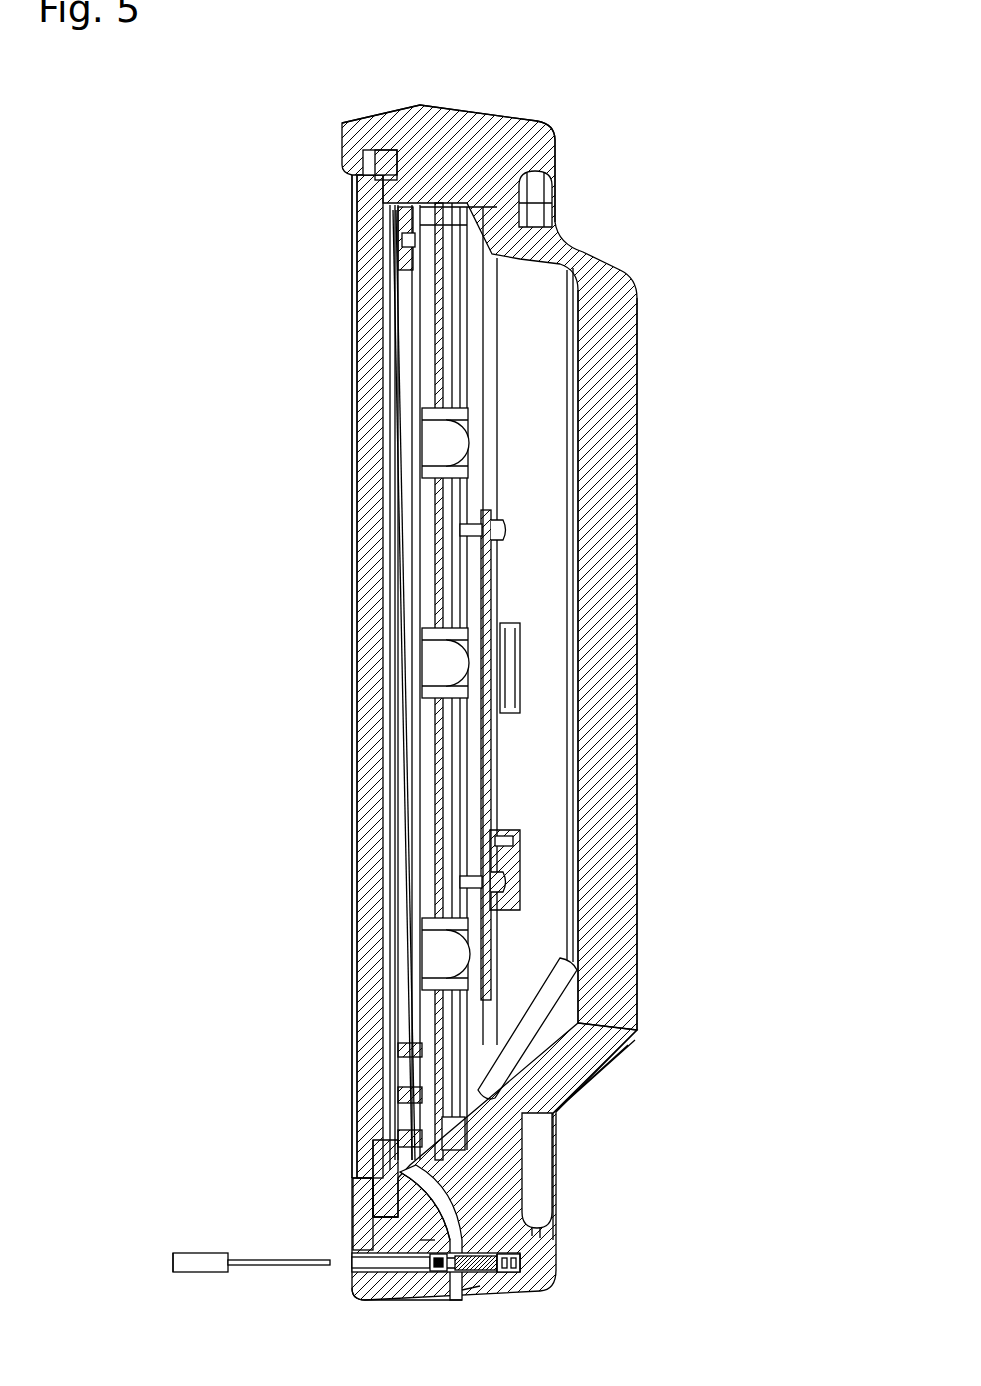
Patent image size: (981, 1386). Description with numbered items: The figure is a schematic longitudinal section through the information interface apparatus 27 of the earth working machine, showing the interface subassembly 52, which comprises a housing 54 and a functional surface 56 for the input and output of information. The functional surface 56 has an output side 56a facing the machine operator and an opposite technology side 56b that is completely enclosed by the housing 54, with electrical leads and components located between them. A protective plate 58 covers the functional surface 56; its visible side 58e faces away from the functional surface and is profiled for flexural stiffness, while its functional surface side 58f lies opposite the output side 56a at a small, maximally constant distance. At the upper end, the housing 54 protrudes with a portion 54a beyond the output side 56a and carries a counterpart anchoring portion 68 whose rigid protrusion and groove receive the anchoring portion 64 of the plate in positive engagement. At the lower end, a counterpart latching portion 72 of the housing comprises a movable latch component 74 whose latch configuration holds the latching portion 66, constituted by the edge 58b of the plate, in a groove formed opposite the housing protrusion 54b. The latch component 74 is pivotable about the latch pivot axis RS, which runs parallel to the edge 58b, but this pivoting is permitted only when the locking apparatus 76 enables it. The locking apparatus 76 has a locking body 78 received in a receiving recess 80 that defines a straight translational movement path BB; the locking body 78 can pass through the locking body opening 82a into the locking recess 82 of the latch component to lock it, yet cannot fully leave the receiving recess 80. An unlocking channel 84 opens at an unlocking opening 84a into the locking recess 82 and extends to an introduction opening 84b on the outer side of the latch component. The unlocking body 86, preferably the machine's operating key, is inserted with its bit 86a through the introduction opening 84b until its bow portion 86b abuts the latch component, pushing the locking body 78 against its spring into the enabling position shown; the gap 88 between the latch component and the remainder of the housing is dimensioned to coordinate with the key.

The information interface apparatus 27 is at (323, 107).
The interface subassembly 52 is at (599, 126).
The housing 54 is at (633, 857).
The portion of housing 54a is at (368, 115).
The housing protrusion 54b is at (520, 1175).
The functional surface 56 is at (406, 672).
The output side 56a is at (407, 590).
The technology side 56b is at (410, 603).
The protective plate 58 is at (357, 413).
The edge of protective plate 58b is at (370, 1220).
The visible side 58e is at (357, 563).
The functional surface side 58f is at (385, 478).
The anchoring portion 64 is at (384, 175).
The latching portion 66 is at (380, 1182).
The counterpart anchoring portion 68 is at (343, 166).
The counterpart latching portion 72 is at (353, 1191).
The latch component 74 is at (368, 1300).
The locking apparatus 76 is at (478, 1284).
The locking body 78 is at (520, 1268).
The receiving recess 80 is at (562, 1272).
The locking recess 82 is at (440, 1272).
The locking body opening 82a is at (470, 1272).
The unlocking channel 84 is at (400, 1271).
The unlocking opening 84a is at (416, 1209).
The introduction opening 84b is at (348, 1262).
The unlocking body 86 is at (190, 1273).
The bit 86a is at (245, 1266).
The bow portion 86b is at (185, 1255).
The gap 88 is at (452, 1248).
The movement path BB is at (562, 1253).
The latch pivot axis RS is at (440, 1262).